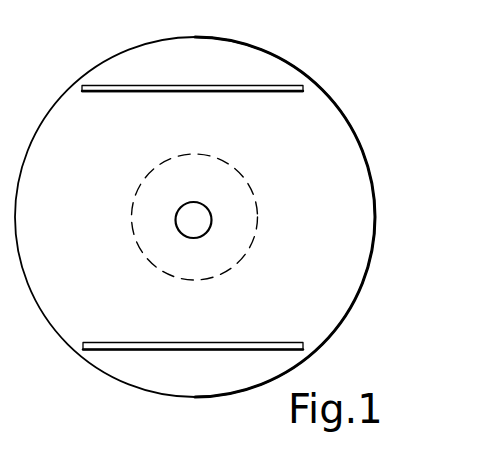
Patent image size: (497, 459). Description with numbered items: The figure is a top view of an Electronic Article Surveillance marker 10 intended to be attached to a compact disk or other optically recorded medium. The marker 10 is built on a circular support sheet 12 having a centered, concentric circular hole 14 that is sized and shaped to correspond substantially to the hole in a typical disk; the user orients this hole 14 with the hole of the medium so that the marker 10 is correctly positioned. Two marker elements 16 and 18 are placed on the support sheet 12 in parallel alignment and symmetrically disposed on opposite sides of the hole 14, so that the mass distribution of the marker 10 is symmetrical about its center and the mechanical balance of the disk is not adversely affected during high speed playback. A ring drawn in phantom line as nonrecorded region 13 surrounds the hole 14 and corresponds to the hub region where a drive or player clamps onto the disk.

The Electronic Article Surveillance marker 10 is at (343, 77).
The circular support sheet 12 is at (373, 181).
The nonrecorded region 13 is at (237, 174).
The circular hole 14 is at (178, 225).
The marker element 16 is at (257, 84).
The marker element 18 is at (142, 351).